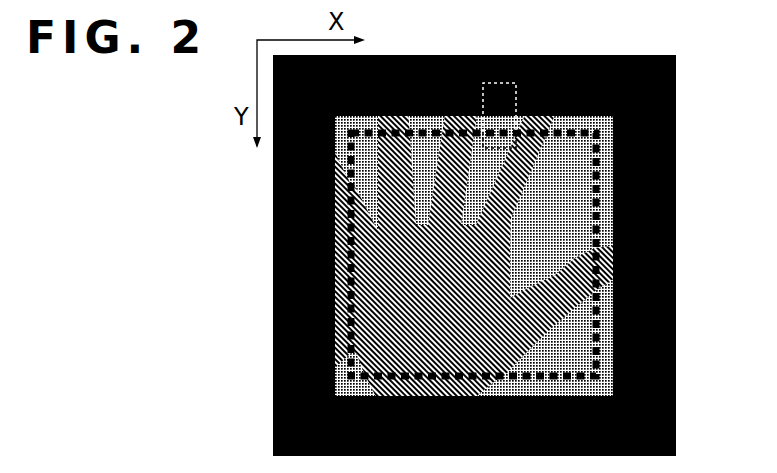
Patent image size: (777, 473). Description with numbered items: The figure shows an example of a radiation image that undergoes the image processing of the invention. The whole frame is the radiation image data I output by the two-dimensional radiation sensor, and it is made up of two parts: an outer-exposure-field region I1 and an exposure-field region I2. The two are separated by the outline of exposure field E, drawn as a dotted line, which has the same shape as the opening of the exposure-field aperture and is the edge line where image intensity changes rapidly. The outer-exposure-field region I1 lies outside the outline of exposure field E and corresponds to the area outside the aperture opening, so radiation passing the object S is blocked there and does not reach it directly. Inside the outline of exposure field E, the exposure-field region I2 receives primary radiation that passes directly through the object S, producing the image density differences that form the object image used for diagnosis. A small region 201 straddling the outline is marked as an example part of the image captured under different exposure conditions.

The region 201 is at (508, 75).
The radiation image data I is at (475, 29).
The outer-exposure-field region I1 is at (614, 428).
The exposure-field region I2 is at (573, 181).
The object S is at (430, 342).
The outline of exposure field E is at (588, 323).